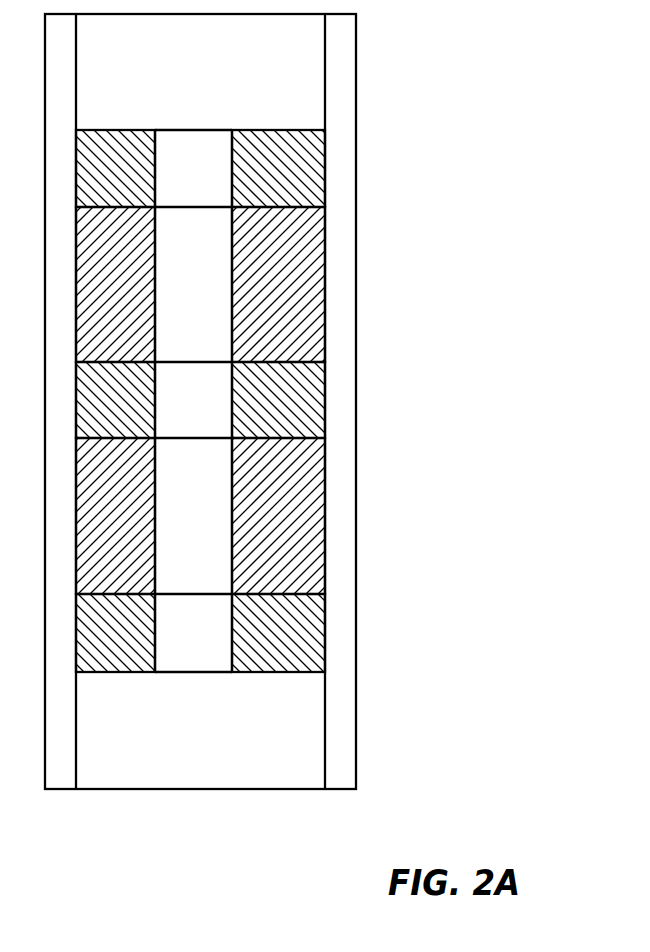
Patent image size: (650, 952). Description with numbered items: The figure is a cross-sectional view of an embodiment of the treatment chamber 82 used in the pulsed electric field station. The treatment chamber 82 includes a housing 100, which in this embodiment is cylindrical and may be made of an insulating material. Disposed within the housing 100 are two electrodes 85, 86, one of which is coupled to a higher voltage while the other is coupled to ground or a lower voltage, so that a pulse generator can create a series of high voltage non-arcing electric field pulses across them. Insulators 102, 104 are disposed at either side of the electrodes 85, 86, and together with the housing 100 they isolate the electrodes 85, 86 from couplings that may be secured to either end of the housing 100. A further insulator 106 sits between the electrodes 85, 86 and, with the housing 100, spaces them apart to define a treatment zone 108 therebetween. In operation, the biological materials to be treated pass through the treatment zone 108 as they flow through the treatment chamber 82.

The treatment chamber 82 is at (321, 401).
The electrode 85 is at (295, 293).
The electrode 86 is at (305, 482).
The housing 100 is at (340, 556).
The insulator 102 is at (299, 153).
The insulator 104 is at (295, 625).
The insulator 106 is at (295, 395).
The treatment zone 108 is at (213, 417).